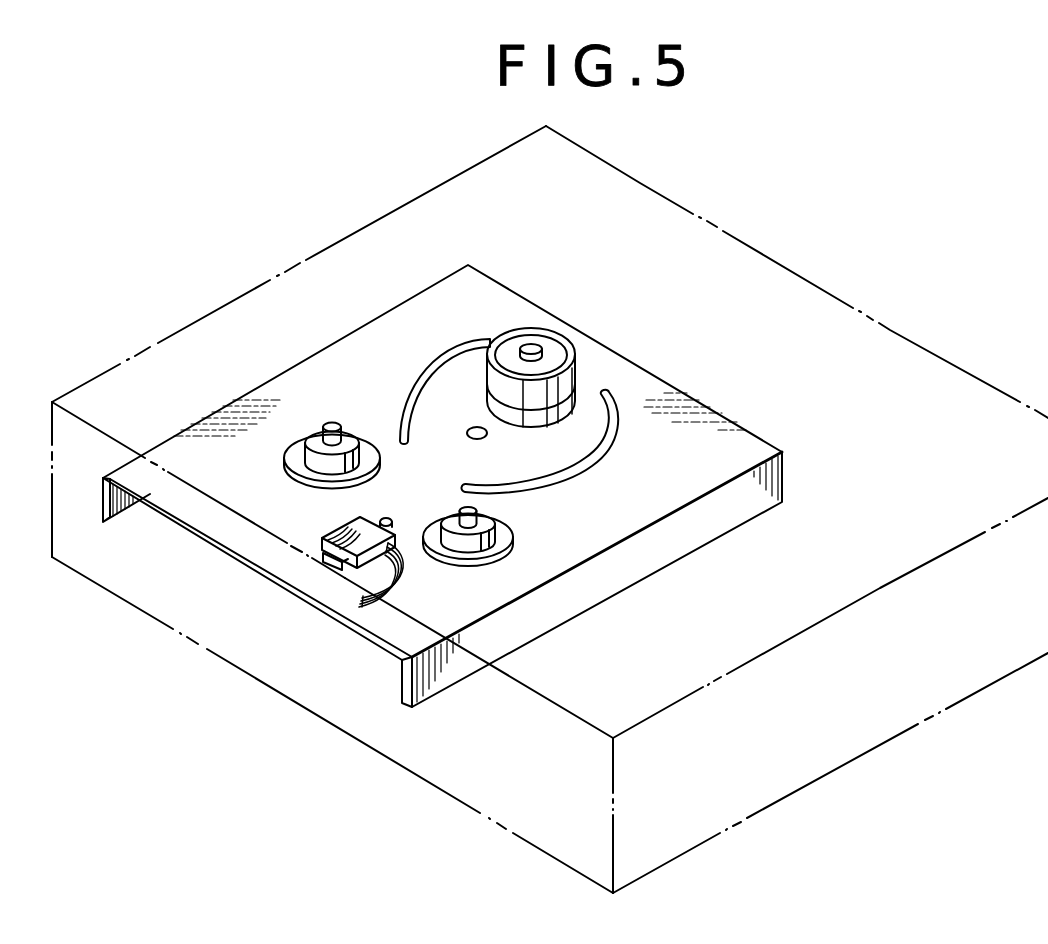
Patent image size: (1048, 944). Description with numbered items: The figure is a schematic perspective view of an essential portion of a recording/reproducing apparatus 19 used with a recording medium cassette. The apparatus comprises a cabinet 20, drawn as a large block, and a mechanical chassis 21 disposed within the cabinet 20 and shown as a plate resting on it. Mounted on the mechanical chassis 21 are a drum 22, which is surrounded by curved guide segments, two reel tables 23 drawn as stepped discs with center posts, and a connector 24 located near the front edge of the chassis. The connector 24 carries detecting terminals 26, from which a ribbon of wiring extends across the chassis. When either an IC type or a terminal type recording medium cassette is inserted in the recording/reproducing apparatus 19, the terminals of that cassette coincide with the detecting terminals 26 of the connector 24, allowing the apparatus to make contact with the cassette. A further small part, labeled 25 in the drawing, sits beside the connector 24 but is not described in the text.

The recording/reproducing apparatus 19 is at (550, 509).
The cabinet 20 is at (934, 354).
The mechanical chassis 21 is at (727, 420).
The drum 22 is at (568, 345).
The reel tables 23 is at (302, 433).
The connector 24 is at (327, 572).
The connector 25 is at (323, 537).
The detecting terminals 26 is at (397, 558).